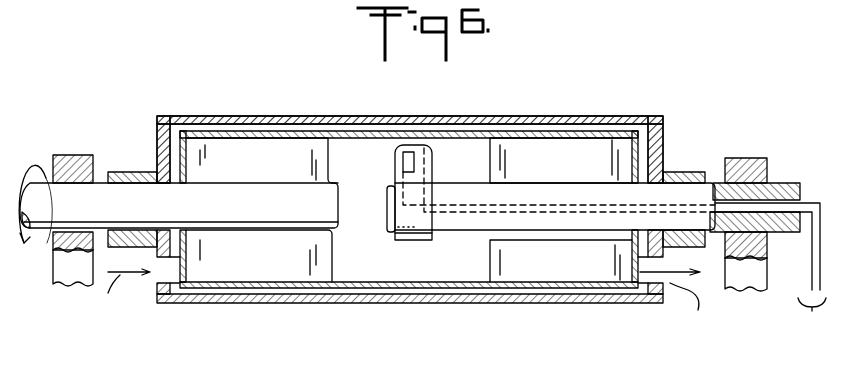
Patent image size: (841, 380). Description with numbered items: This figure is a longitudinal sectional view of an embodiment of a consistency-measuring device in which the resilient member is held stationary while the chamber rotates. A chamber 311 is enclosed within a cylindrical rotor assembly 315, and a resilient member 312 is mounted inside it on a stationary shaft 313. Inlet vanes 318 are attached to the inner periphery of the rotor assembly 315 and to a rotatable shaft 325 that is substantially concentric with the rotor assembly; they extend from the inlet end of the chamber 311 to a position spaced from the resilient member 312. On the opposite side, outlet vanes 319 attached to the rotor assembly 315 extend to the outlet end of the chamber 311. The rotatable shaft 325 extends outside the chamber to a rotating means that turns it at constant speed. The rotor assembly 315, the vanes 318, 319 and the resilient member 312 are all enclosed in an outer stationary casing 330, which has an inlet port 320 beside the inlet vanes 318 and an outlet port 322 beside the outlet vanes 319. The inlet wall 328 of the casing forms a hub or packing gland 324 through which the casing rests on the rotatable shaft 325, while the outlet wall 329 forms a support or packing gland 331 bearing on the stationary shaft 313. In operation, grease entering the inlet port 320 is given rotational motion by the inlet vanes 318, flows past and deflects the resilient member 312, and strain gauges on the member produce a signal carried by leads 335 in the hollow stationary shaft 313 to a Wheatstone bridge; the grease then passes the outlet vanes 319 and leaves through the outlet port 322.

The chamber 311 is at (441, 266).
The resilient member 312 is at (432, 163).
The stationary shaft 313 is at (589, 206).
The cylindrical rotor assembly 315 is at (471, 292).
The inlet vanes 318 is at (278, 262).
The outlet vanes 319 is at (585, 272).
The inlet port 320 is at (190, 269).
The outlet port 322 is at (672, 264).
The hub or packing gland 324 is at (130, 172).
The rotatable shaft 325 is at (218, 207).
The inlet wall 328 is at (157, 120).
The outlet wall 329 is at (665, 124).
The outer stationary casing 330 is at (580, 116).
The support or packing gland 331 is at (707, 166).
The leads 335 is at (771, 257).